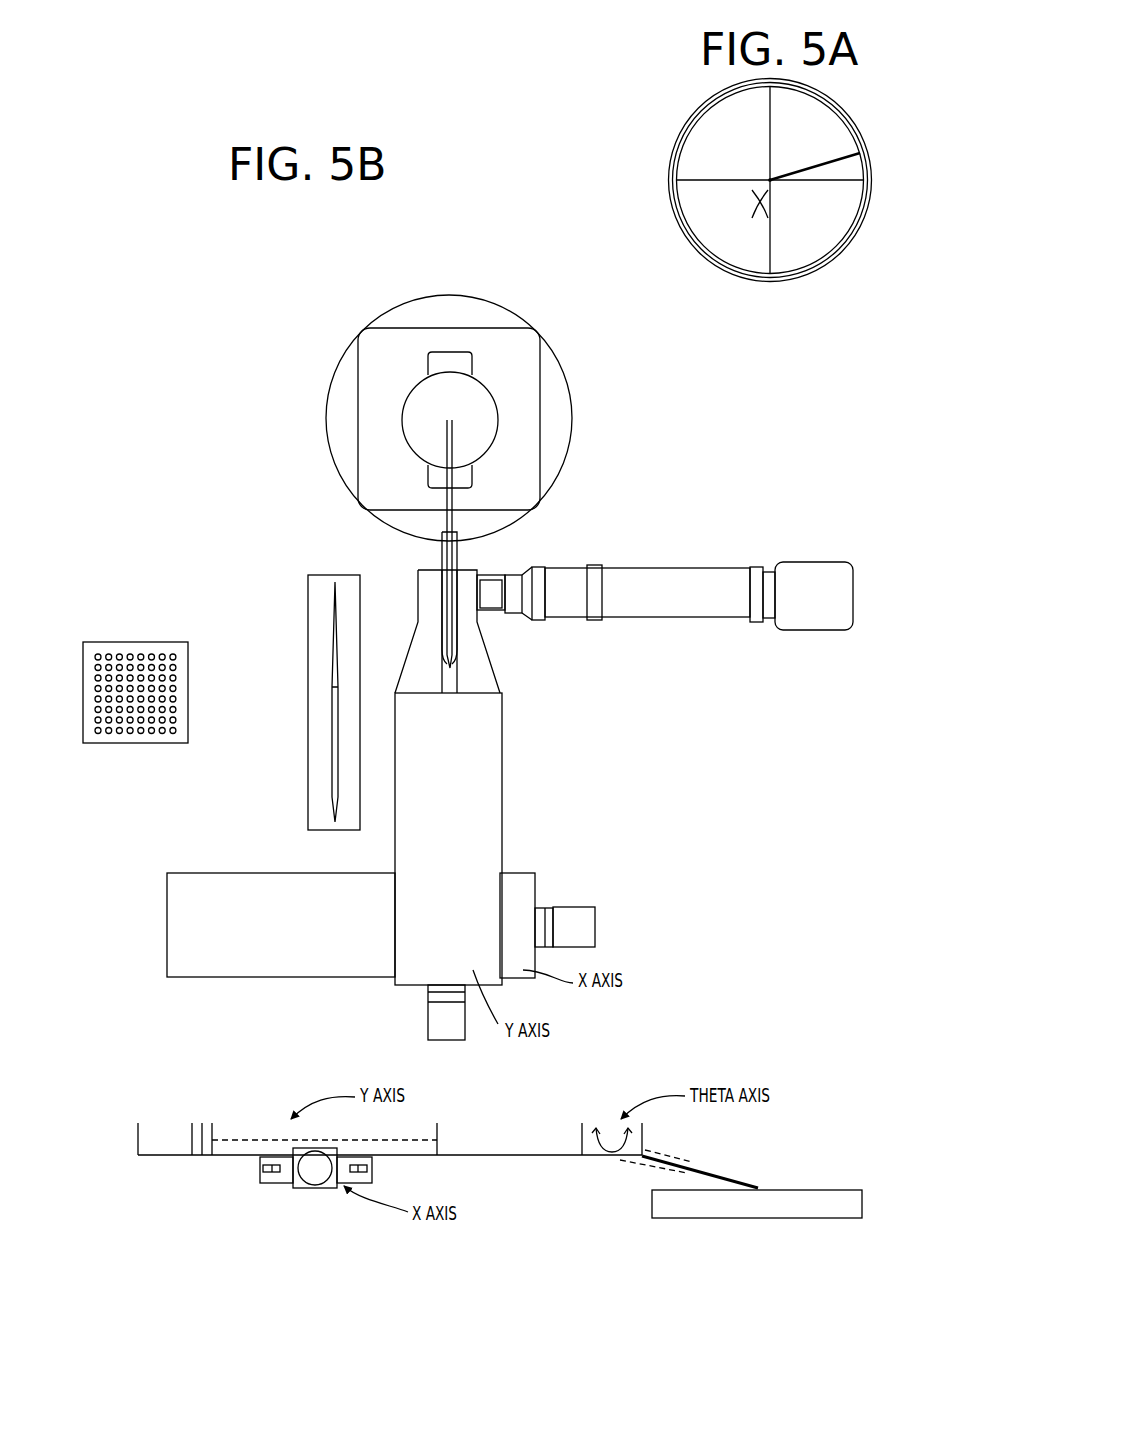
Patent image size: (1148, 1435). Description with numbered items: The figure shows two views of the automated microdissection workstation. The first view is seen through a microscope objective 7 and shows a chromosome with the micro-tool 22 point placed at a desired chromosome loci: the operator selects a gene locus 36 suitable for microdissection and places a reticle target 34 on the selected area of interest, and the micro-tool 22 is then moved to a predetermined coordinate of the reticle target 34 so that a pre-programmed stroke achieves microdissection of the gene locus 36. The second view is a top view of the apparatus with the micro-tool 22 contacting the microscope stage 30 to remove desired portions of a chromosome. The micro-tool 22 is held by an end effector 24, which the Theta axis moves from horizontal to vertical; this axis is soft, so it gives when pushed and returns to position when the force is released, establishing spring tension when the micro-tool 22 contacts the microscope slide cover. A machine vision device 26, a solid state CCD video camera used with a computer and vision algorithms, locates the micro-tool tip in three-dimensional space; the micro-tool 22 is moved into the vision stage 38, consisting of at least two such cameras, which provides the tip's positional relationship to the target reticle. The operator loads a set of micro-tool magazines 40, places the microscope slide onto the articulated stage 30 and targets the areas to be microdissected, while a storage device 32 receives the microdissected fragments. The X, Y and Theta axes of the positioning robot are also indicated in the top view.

In FIG. 5B, the objective 7 is at (482, 425).
In FIG. 5A, the micro-tool 22 is at (800, 165).
In FIG. 5B, the micro-tool 22 is at (454, 447).
In FIG. 5B, the end effector 24 is at (457, 550).
In FIG. 5B, the machine vision device 26 is at (804, 610).
In FIG. 5B, the microscope stage 30 is at (389, 343).
In FIG. 5B, the storage device 32 is at (139, 643).
In FIG. 5A, the reticle target 34 is at (766, 248).
In FIG. 5A, the gene locus 36 is at (778, 184).
In FIG. 5B, the vision stage 38 is at (472, 615).
In FIG. 5B, the micro-tool magazine 40 is at (326, 581).